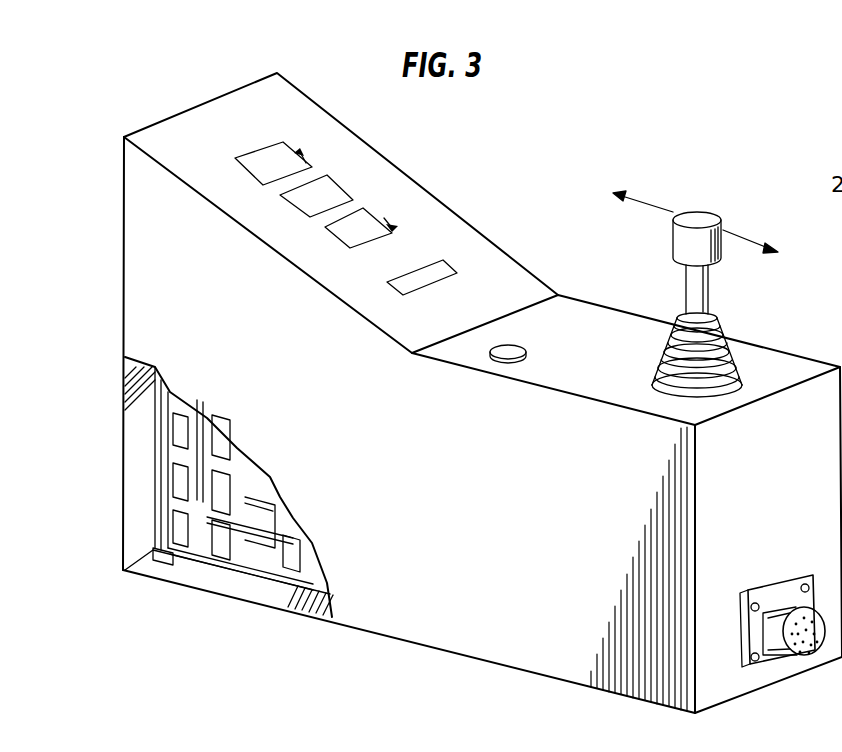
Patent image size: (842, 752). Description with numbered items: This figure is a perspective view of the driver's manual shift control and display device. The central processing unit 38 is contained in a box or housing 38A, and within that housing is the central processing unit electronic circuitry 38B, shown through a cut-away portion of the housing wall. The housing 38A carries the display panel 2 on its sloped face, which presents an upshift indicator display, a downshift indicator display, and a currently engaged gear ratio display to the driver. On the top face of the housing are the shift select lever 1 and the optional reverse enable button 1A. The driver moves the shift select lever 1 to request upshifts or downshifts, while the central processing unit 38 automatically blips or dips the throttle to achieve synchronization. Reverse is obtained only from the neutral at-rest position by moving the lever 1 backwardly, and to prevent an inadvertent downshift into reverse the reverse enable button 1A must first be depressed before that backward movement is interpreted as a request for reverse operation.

The shift select lever 1 is at (712, 214).
The reverse enable button 1A is at (535, 368).
The display panel 2 is at (350, 152).
The central processing unit 38 is at (152, 428).
The housing 38A is at (448, 602).
The central processing unit electronic circuitry 38B is at (182, 478).